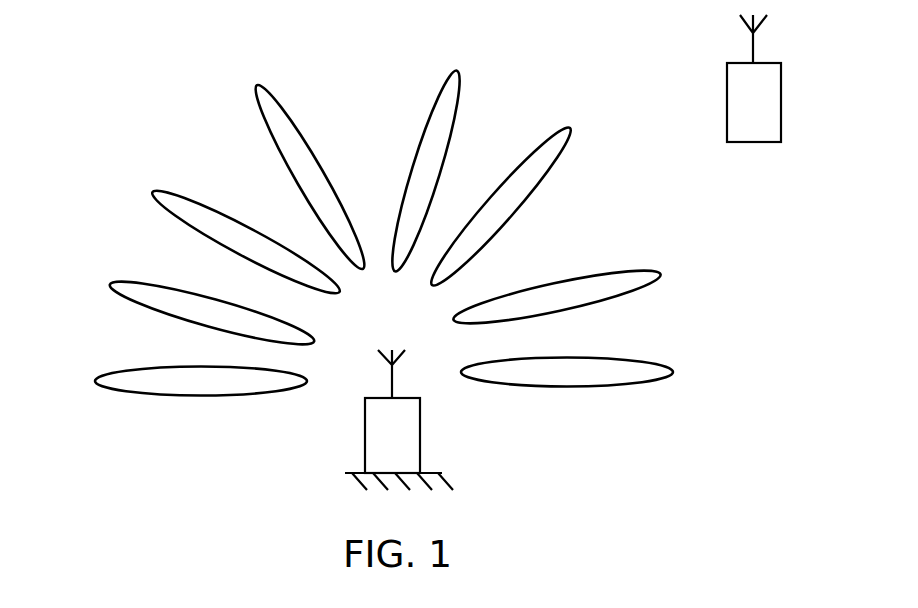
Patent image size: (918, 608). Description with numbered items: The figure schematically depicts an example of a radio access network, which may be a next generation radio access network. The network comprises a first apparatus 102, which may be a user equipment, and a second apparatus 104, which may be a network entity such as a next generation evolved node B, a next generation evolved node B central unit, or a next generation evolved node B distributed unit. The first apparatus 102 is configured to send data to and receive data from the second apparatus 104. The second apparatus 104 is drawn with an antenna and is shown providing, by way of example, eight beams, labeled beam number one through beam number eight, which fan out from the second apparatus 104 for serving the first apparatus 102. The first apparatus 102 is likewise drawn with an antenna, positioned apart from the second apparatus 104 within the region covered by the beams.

The first apparatus 102 is at (772, 113).
The second apparatus 104 is at (410, 446).